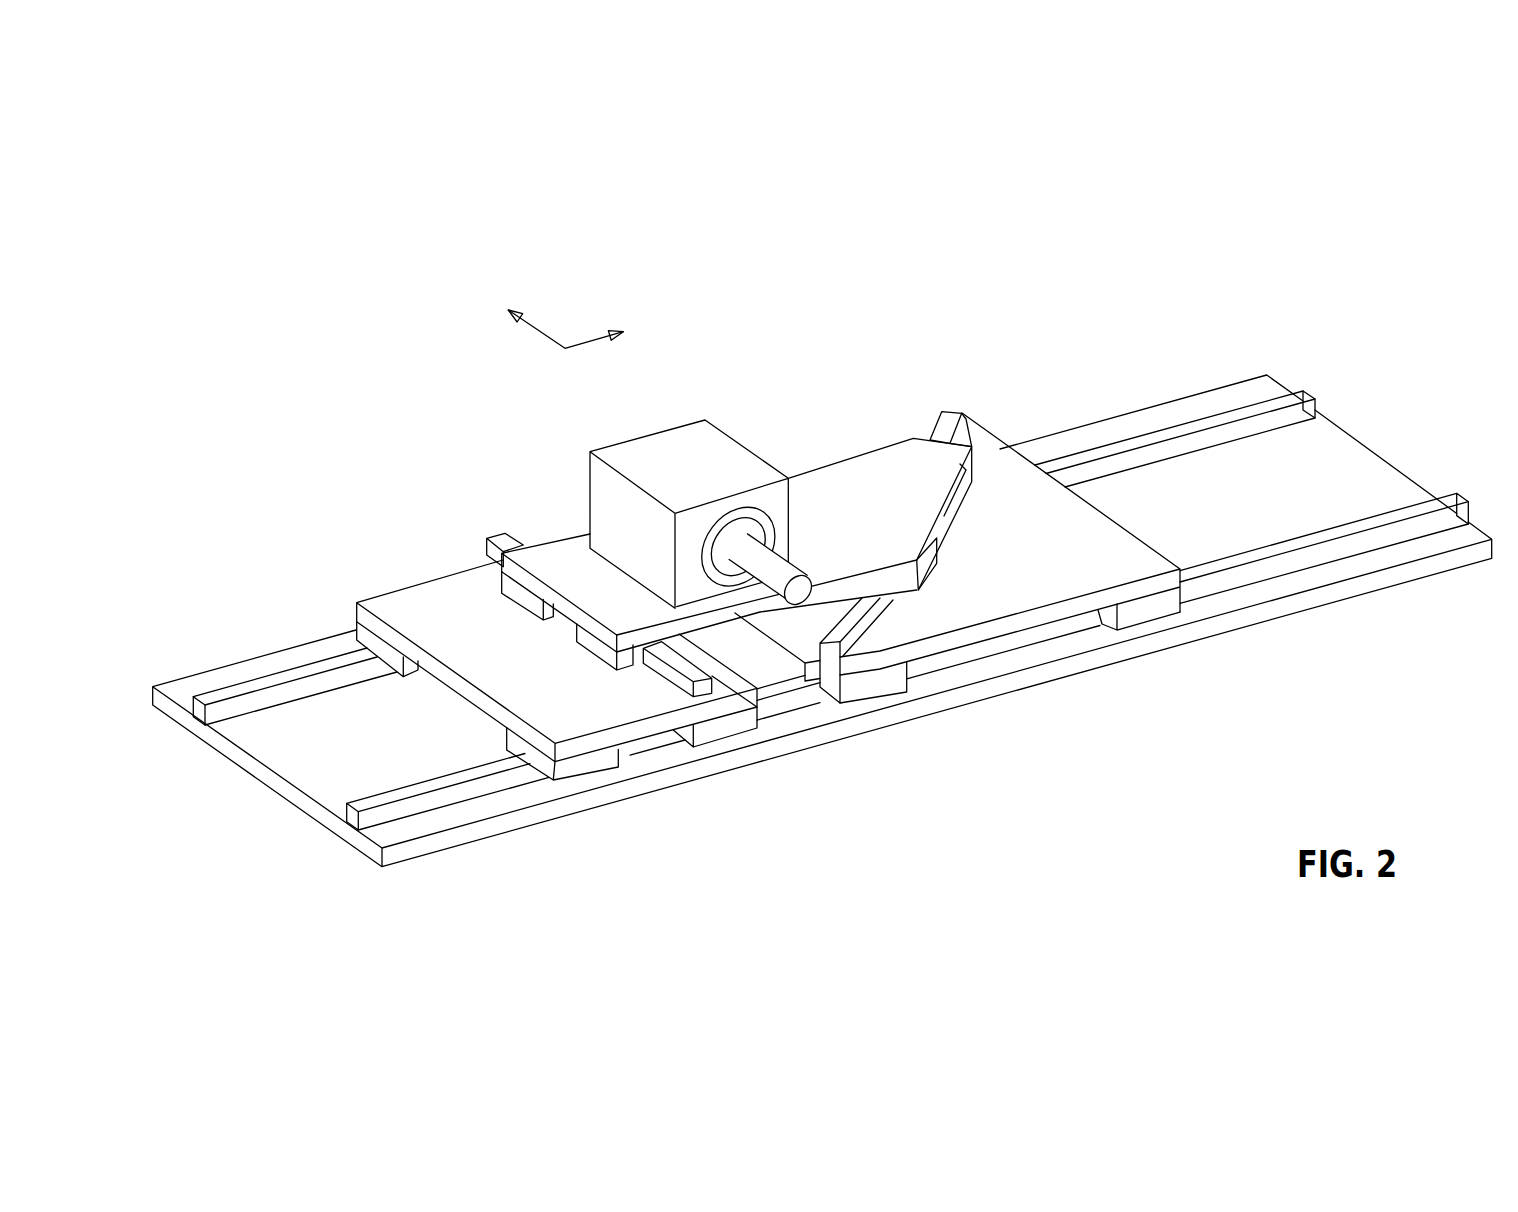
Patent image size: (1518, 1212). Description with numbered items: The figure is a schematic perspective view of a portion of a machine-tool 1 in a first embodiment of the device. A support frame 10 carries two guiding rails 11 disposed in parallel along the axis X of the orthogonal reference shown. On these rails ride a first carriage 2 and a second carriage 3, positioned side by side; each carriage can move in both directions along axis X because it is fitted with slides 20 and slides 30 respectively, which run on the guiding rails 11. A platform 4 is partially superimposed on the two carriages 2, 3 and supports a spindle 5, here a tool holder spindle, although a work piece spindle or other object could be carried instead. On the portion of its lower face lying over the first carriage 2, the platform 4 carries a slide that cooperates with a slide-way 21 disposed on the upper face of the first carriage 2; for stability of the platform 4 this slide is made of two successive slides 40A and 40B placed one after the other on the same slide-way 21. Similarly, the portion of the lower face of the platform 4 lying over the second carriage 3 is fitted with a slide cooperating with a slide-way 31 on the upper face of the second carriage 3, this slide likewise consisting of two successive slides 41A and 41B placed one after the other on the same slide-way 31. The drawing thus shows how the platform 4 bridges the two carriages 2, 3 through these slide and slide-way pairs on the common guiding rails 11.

The machine-tool 1 is at (1023, 367).
The first carriage 2 is at (400, 600).
The second carriage 3 is at (1118, 537).
The platform 4 is at (850, 468).
The motor 5 is at (698, 417).
The support frame 10 is at (303, 758).
The guiding rails 11 is at (1150, 435).
The slides 20 is at (357, 635).
The slide-way 21 is at (758, 714).
The slides 30 is at (882, 692).
The slide-way 31 is at (945, 417).
The slide 40A is at (598, 648).
The slide 40B is at (513, 593).
The slide 41A is at (928, 570).
The slide 41B is at (973, 490).